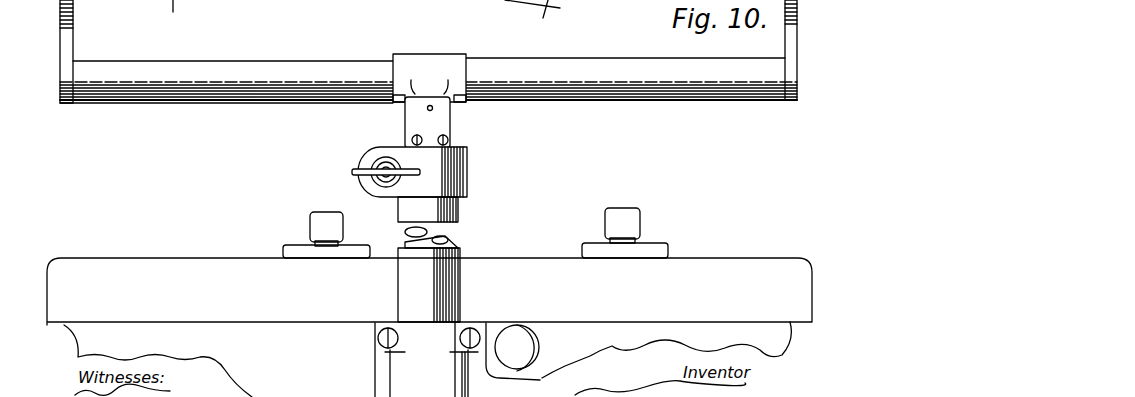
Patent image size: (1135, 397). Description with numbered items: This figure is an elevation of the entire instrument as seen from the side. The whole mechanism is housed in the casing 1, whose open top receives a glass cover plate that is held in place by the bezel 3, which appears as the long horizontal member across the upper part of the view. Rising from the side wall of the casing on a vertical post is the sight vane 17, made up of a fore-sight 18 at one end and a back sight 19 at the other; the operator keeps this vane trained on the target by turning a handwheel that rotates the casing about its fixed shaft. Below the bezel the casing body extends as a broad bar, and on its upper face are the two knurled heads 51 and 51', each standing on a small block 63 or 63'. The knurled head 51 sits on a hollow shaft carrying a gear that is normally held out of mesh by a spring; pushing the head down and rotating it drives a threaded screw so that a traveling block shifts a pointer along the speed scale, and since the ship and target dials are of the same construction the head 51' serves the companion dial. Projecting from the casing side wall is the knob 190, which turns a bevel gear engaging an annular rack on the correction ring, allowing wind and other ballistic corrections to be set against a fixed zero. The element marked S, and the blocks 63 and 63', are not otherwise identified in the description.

The casing 1 is at (427, 359).
The bezel 3 is at (150, 262).
The sight vane 17 is at (302, 48).
The fore-sight 18 is at (73, 42).
The back sight 19 is at (790, 35).
The spring S is at (172, 15).
The knurled head 51 is at (320, 217).
The stud 51' is at (645, 219).
The bearing block 63 is at (314, 242).
The bearing block 63' is at (603, 242).
The knob 190 is at (539, 348).